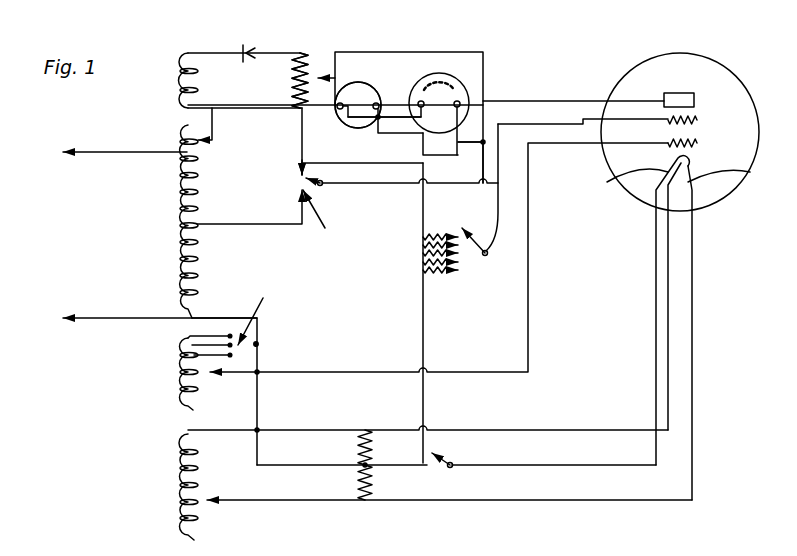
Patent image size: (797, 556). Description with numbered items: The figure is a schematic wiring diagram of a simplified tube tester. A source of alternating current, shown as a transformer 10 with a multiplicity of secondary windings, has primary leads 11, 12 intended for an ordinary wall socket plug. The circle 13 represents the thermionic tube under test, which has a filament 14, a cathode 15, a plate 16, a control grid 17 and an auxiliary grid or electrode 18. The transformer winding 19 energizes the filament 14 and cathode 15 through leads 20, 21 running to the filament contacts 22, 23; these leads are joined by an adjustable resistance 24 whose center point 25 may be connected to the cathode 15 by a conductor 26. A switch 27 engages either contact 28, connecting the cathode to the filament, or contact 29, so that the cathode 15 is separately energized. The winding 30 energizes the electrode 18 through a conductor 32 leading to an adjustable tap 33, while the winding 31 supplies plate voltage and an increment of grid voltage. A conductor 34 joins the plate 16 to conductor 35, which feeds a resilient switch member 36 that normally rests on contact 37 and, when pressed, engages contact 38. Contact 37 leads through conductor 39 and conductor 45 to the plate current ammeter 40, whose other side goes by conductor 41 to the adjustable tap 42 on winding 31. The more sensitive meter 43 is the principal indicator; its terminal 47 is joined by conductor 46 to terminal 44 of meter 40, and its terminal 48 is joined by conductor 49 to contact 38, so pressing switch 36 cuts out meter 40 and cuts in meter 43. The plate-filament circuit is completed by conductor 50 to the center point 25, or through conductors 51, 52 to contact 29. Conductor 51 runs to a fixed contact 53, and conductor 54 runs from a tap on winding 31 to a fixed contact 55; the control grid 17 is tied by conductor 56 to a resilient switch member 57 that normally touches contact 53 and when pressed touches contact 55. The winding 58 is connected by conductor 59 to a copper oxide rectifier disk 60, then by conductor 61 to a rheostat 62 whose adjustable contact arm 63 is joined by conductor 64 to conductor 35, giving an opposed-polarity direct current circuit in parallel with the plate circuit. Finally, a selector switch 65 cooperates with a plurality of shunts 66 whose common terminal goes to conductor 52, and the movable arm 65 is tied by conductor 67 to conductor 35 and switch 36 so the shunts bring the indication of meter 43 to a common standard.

The transformer 10 is at (178, 251).
The primary lead 11 is at (120, 153).
The primary lead 12 is at (125, 317).
The thermionic tube under test 13 is at (729, 69).
The filament 14 is at (732, 181).
The cathode 15 is at (623, 180).
The plate 16 is at (686, 93).
The control grid 17 is at (697, 120).
The auxiliary grid or electrode 18 is at (697, 143).
The transformer winding 19 is at (180, 478).
The lead 20 is at (540, 429).
The lead 21 is at (229, 503).
The filament contact 22 is at (674, 203).
The filament contact 23 is at (694, 200).
The adjustable resistance 24 is at (374, 452).
The center point 25 is at (362, 464).
The conductor 26 is at (655, 354).
The switch 27 is at (456, 458).
The contact 28 is at (446, 469).
The contact 29 is at (372, 481).
The winding 30 is at (180, 377).
The winding 31 is at (179, 205).
The conductor 32 is at (478, 371).
The adjustable tap 33 is at (229, 377).
The conductor 34 is at (560, 100).
The conductor 35 is at (484, 92).
The resilient switch member 36 is at (471, 150).
The contact 37 is at (421, 142).
The contact 38 is at (421, 153).
The conductor 39 is at (392, 132).
The plate current ammeter 40 is at (353, 92).
The conductor 41 is at (264, 110).
The adjustable tap 42 is at (207, 143).
The meter 43 is at (462, 77).
The terminal 44 is at (343, 84).
The conductor 45 is at (411, 116).
The conductor 46 is at (422, 100).
The terminal 47 is at (446, 82).
The terminal 48 is at (461, 102).
The conductor 49 is at (471, 130).
The conductor 50 is at (261, 332).
The conductor 51 is at (303, 140).
The conductor 52 is at (422, 222).
The fixed contact 53 is at (299, 177).
The conductor 54 is at (262, 226).
The fixed contact 55 is at (326, 217).
The conductor 56 is at (586, 120).
The resilient switch member 57 is at (323, 188).
The winding 58 is at (178, 85).
The conductor 59 is at (212, 52).
The copper oxide rectifier disk 60 is at (249, 45).
The conductor 61 is at (292, 50).
The rheostat 62 is at (294, 78).
The adjustable contact arm 63 is at (323, 70).
The conductor 64 is at (383, 80).
The selector switch 65 is at (486, 243).
The shunts 66 is at (440, 232).
The conductor 67 is at (499, 213).